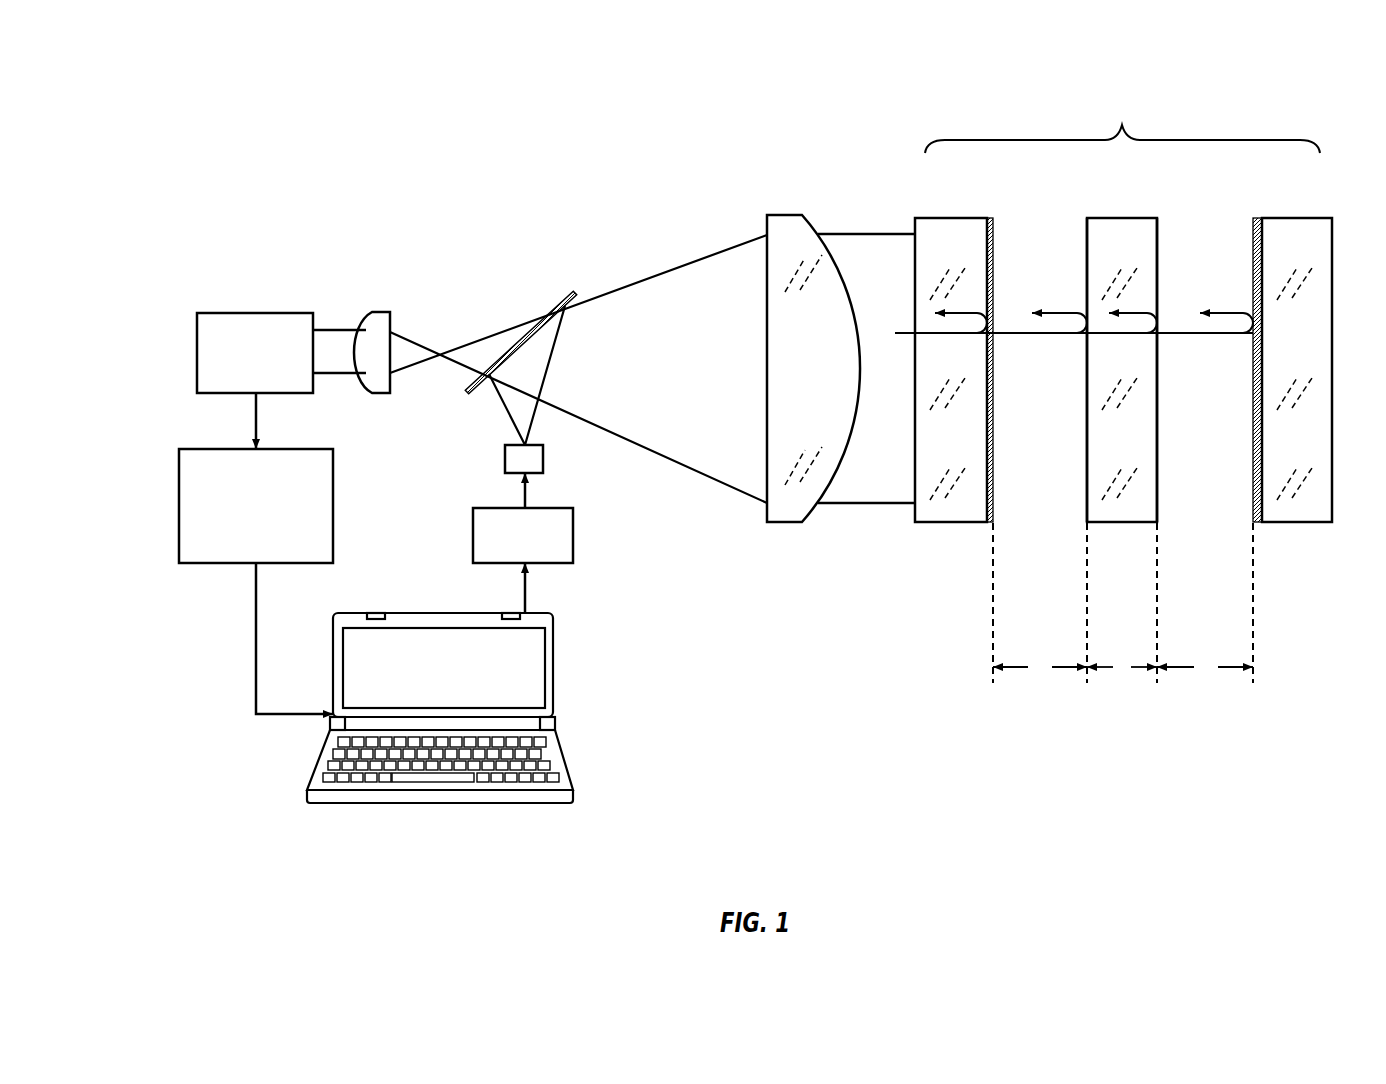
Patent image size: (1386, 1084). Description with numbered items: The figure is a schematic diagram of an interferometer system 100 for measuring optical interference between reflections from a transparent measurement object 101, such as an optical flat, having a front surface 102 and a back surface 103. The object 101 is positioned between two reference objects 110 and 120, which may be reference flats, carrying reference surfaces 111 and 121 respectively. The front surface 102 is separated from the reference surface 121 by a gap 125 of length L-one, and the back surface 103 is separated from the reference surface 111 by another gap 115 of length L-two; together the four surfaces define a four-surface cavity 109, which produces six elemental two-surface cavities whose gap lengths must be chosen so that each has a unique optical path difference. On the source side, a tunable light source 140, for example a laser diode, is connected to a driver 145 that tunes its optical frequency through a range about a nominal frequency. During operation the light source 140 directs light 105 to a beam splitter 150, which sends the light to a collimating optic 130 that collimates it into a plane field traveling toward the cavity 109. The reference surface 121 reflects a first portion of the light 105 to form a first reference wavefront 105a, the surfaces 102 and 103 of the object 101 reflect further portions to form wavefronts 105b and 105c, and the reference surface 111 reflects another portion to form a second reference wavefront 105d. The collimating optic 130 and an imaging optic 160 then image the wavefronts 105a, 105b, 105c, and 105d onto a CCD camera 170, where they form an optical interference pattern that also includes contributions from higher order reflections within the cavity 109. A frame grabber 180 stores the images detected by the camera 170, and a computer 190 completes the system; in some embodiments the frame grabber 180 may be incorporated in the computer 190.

The interferometer system 100 is at (805, 789).
The transparent measurement object 101 is at (1120, 218).
The front surface 102 is at (1085, 247).
The back surface 103 is at (1158, 262).
The light 105 is at (907, 333).
The first reference wavefront 105a is at (990, 290).
The wavefront 105b is at (1058, 318).
The wavefront 105c is at (1155, 290).
The second reference wavefront 105d is at (1234, 318).
The four-surface cavity 109 is at (1122, 122).
The reference object 110 is at (1293, 218).
The reference surface 111 is at (1253, 497).
The gap 115 is at (1205, 447).
The reference object 120 is at (950, 218).
The reference surface 121 is at (992, 497).
The gap 125 is at (1040, 447).
The collimating optic 130 is at (767, 215).
The tunable light source 140 is at (505, 458).
The driver 145 is at (543, 555).
The beam splitter 150 is at (518, 342).
The imaging optic 160 is at (392, 312).
The CCD camera 170 is at (275, 367).
The frame grabber 180 is at (276, 520).
The computer 190 is at (555, 700).